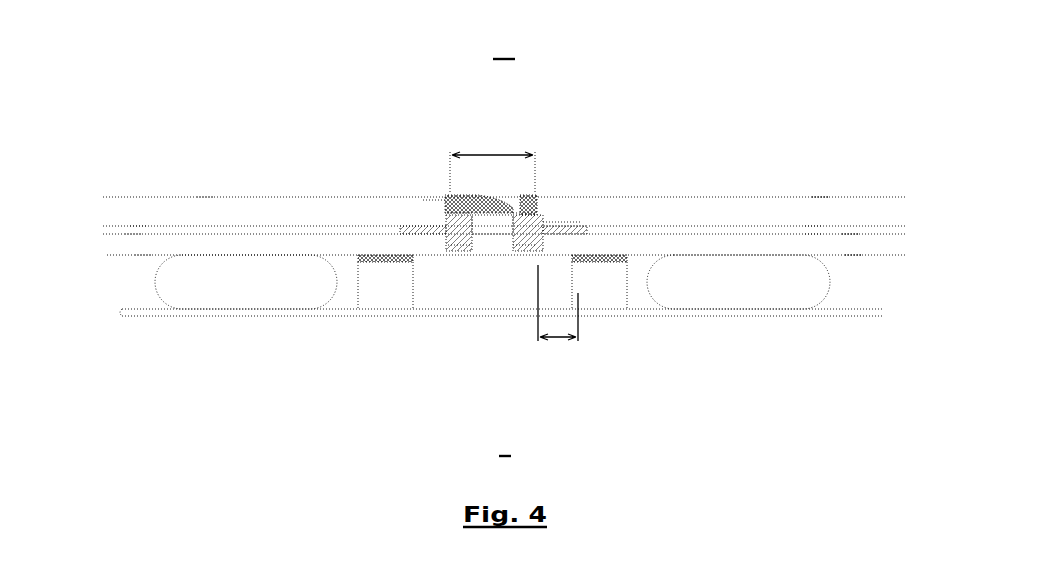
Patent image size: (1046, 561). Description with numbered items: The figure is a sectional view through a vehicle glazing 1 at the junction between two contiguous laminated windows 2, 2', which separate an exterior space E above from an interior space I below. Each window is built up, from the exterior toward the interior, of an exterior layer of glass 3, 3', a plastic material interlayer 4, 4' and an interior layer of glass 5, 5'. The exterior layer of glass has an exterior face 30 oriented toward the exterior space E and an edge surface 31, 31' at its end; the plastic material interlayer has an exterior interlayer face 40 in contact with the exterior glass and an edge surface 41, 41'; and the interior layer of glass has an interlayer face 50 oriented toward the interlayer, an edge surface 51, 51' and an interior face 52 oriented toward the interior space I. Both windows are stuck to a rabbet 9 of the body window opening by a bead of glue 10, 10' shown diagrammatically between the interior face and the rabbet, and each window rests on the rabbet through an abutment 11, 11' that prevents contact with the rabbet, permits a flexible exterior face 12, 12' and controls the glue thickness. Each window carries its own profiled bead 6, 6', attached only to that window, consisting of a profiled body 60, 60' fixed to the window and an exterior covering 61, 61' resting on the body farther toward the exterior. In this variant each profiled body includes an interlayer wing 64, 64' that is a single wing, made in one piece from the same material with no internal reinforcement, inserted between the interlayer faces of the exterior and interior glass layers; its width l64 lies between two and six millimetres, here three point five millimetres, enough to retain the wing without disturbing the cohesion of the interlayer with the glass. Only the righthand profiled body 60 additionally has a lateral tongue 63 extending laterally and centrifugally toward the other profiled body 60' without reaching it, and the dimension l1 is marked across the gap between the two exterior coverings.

The glazing 1 is at (452, 57).
The window 2 is at (735, 87).
The window 2' is at (265, 96).
The exterior layer of glass 3 is at (726, 185).
The exterior layer of glass 3' is at (290, 178).
The plastic material interlayer 4 is at (727, 228).
The plastic material interlayer 4' is at (275, 235).
The interior layer of glass 5 is at (726, 275).
The interior layer of glass 5' is at (282, 267).
The profiled bead 6 is at (560, 94).
The profiled bead 6' is at (412, 93).
The rabbet 9 is at (650, 312).
The bead of glue 10 is at (738, 307).
The bead of glue 10' is at (246, 315).
The abutment 11 is at (604, 322).
The abutment 11' is at (368, 308).
The flexible exterior face 12 is at (599, 329).
The flexible exterior face 12' is at (388, 321).
The exterior face of the exterior layer of glass 30 is at (856, 149).
The edge surface of the exterior layer of glass 31 is at (564, 175).
The edge surface of the exterior layer of glass 31' is at (427, 183).
The exterior interlayer face 40 is at (803, 182).
The edge surface of the plastic material interlayer 41 is at (608, 203).
The edge surface of the plastic material interlayer 41' is at (356, 200).
The interlayer face of the interior layer of glass 50 is at (844, 296).
The edge surface of the interior layer of glass 51 is at (544, 271).
The edge surface of the interior layer of glass 51' is at (443, 265).
The interior face of the interior layer of glass 52 is at (891, 280).
The profiled body 60 is at (517, 256).
The profiled body 60' is at (452, 283).
The exterior covering 61 is at (548, 170).
The exterior covering 61' is at (465, 169).
The lateral tongue 63 is at (487, 255).
The interlayer wing 64 is at (600, 187).
The interlayer wing 64' is at (392, 179).
The exterior space E is at (504, 47).
The interior space I is at (505, 444).
The length l1 is at (492, 161).
The width of the interlayer wing l64 is at (558, 322).